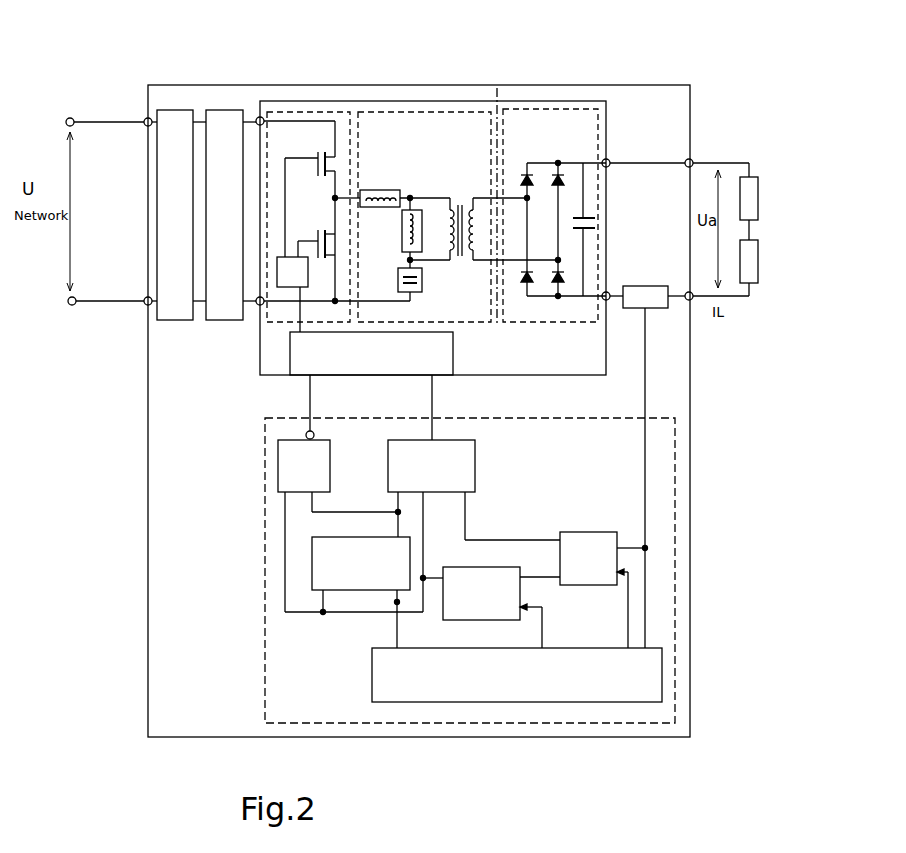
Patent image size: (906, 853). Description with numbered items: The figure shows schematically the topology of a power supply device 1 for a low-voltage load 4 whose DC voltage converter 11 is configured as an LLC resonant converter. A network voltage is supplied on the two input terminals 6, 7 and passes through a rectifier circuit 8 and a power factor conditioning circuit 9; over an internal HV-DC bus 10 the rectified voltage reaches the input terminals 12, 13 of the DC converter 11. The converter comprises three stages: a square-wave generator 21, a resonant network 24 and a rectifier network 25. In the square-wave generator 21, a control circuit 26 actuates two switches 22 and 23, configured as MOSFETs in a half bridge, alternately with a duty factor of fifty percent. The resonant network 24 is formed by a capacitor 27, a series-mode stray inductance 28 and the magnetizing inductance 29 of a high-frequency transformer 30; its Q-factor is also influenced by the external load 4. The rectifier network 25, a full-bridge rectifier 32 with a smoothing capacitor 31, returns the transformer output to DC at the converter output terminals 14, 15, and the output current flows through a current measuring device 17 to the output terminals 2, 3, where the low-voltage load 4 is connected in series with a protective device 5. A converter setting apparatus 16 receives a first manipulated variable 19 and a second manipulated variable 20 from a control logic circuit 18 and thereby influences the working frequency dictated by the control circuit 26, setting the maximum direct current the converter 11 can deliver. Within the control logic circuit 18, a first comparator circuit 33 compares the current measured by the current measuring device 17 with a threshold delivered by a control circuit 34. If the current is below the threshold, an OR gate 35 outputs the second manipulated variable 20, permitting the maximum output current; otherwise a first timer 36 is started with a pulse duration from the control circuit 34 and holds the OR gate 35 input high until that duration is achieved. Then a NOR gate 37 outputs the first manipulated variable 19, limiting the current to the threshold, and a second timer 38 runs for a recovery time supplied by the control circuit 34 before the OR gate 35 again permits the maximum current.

The electronic power supply device 1 is at (648, 85).
The output terminal 2 is at (692, 159).
The output terminal 3 is at (692, 299).
The low-voltage load 4 is at (755, 177).
The protective device 5 is at (754, 284).
The input terminal 6 is at (145, 119).
The input terminal 7 is at (145, 304).
The rectifier circuit 8 is at (168, 123).
The power factor conditioning circuit 9 is at (217, 110).
The internal HV-DC bus 10 is at (250, 118).
The DC converter 11 is at (437, 101).
The input terminal 12 is at (259, 117).
The input terminal 13 is at (257, 305).
The converter output terminal 14 is at (611, 159).
The converter output terminal 15 is at (608, 291).
The converter setting apparatus 16 is at (300, 345).
The current measuring device 17 is at (647, 286).
The control logic circuit 18 is at (265, 492).
The first manipulated variable 19 is at (308, 394).
The second manipulated variable 20 is at (434, 402).
The square-wave generator 21 is at (283, 110).
The switch 22 is at (323, 150).
The switch 23 is at (320, 235).
The resonant network 24 is at (553, 175).
The rectifier network 25 is at (588, 212).
The control circuit 26 is at (283, 290).
The capacitor 27 is at (421, 292).
The series-mode stray inductance 28 is at (375, 190).
The magnetizing inductance 29 is at (412, 205).
The high-frequency transformer 30 is at (459, 205).
The smoothing capacitor 31 is at (592, 214).
The full-bridge rectifier 32 is at (540, 172).
The first comparator circuit 33 is at (585, 540).
The control circuit 34 is at (481, 688).
The OR gate 35 is at (466, 463).
The first timer 36 is at (480, 577).
The NOR gate 37 is at (297, 483).
The second timer 38 is at (327, 580).